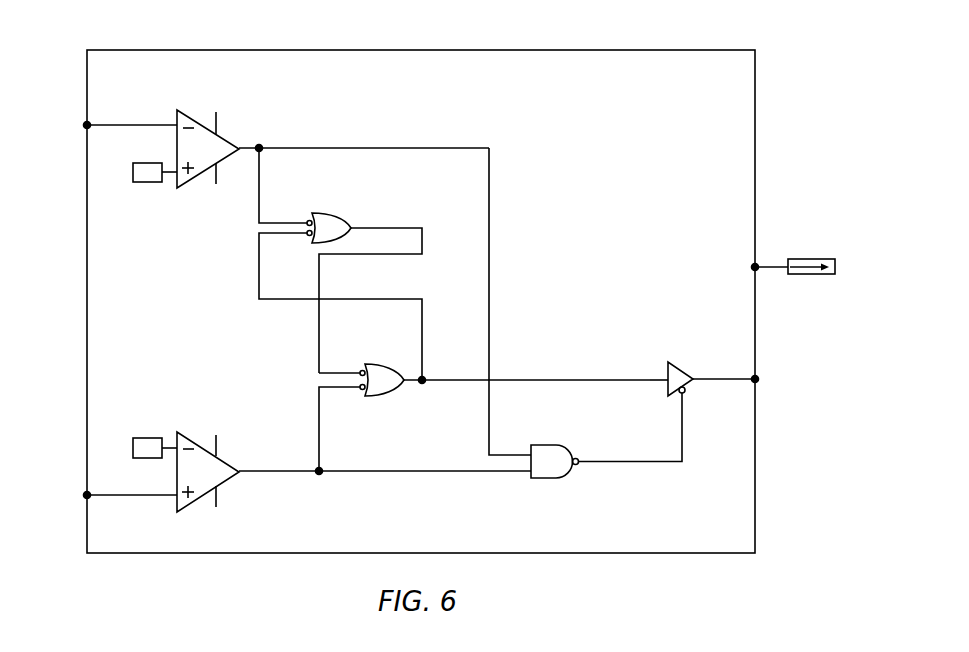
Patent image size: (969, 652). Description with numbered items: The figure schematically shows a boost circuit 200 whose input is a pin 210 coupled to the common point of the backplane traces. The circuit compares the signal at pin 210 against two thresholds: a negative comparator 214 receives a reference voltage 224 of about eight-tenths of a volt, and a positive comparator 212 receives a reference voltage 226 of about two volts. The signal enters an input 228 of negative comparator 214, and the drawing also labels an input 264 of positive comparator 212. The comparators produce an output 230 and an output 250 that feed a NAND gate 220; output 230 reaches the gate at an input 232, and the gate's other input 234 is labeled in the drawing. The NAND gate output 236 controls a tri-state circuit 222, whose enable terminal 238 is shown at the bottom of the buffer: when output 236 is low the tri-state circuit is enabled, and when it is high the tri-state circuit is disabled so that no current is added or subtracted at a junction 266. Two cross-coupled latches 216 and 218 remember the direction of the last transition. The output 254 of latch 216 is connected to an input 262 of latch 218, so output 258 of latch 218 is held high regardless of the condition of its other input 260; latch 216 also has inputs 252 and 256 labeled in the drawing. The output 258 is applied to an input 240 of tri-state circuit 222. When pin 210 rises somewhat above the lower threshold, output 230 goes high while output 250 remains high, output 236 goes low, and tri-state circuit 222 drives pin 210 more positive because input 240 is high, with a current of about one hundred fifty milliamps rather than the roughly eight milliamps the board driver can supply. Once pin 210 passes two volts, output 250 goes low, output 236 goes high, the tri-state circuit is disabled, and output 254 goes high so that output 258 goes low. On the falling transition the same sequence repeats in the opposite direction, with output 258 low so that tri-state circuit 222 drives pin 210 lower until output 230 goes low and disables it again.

The boost circuit 200 is at (807, 86).
The pin 210 is at (812, 258).
The positive comparator 212 is at (190, 118).
The negative comparator 214 is at (192, 437).
The latch 216 is at (320, 213).
The latch 218 is at (373, 365).
The NAND gate 220 is at (547, 445).
The tri-state circuit 222 is at (686, 370).
The reference voltage 224 is at (148, 438).
The reference voltage 226 is at (148, 183).
The input of negative comparator 228 is at (166, 495).
The output of negative comparator 230 is at (240, 474).
The input of NAND gate 232 is at (528, 470).
The first input of NAND gate 234 is at (527, 455).
The output of NAND gate 236 is at (576, 466).
The enable input of inverter 238 is at (688, 392).
The input of tri-state circuit 240 is at (667, 381).
The output of positive comparator 250 is at (240, 147).
The first input of first NOR gate 252 is at (307, 222).
The output of latch 254 is at (350, 228).
The second input of first NOR gate 256 is at (307, 234).
The output of latch 258 is at (403, 383).
The input 260 is at (360, 388).
The input of latch 262 is at (360, 373).
The inverting input of first comparator 264 is at (176, 125).
The junction 266 is at (756, 379).